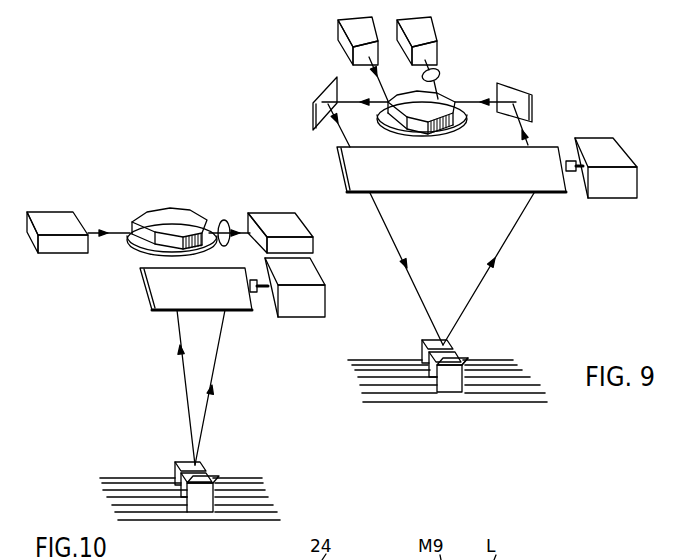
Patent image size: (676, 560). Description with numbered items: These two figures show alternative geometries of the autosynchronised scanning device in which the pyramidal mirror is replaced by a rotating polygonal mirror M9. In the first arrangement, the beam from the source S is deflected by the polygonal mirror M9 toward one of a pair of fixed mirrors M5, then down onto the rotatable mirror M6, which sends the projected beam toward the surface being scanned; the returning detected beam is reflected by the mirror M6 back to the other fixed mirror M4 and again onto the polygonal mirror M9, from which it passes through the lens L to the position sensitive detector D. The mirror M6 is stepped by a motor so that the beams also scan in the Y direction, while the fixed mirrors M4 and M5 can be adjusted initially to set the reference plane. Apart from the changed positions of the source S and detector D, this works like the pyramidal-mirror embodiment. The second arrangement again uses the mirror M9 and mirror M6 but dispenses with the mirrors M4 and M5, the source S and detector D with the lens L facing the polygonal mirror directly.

In FIG. 9, the source S is at (358, 41).
In FIG. 10, the source S is at (57, 232).
In FIG. 9, the position sensitive detector D is at (417, 41).
In FIG. 10, the position sensitive detector D is at (280, 233).
In FIG. 9, the lens L is at (440, 74).
In FIG. 10, the lens L is at (228, 220).
In FIG. 9, the polygonal mirror M9 is at (407, 98).
In FIG. 10, the polygonal mirror M9 is at (157, 216).
In FIG. 9, the fixed mirror M5 is at (322, 92).
In FIG. 9, the fixed mirror M4 is at (544, 81).
In FIG. 9, the rotatable mirror M6 is at (554, 194).
In FIG. 10, the rotatable mirror M6 is at (151, 288).